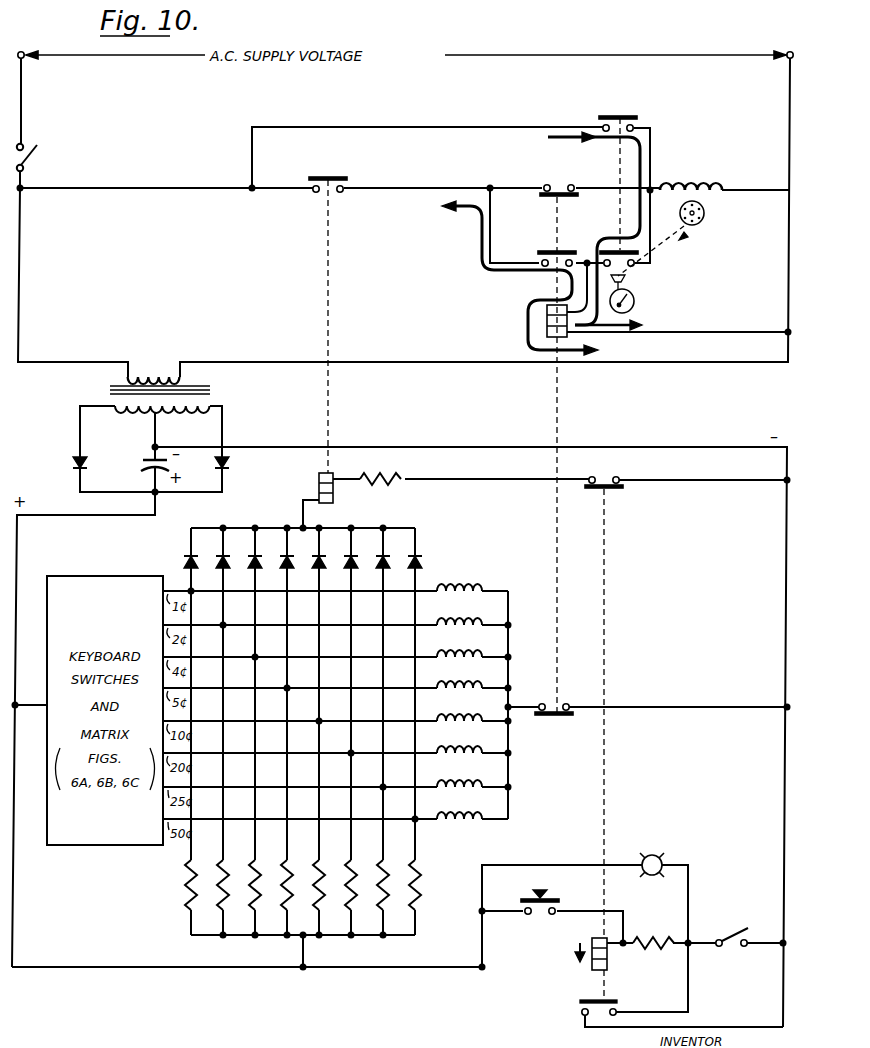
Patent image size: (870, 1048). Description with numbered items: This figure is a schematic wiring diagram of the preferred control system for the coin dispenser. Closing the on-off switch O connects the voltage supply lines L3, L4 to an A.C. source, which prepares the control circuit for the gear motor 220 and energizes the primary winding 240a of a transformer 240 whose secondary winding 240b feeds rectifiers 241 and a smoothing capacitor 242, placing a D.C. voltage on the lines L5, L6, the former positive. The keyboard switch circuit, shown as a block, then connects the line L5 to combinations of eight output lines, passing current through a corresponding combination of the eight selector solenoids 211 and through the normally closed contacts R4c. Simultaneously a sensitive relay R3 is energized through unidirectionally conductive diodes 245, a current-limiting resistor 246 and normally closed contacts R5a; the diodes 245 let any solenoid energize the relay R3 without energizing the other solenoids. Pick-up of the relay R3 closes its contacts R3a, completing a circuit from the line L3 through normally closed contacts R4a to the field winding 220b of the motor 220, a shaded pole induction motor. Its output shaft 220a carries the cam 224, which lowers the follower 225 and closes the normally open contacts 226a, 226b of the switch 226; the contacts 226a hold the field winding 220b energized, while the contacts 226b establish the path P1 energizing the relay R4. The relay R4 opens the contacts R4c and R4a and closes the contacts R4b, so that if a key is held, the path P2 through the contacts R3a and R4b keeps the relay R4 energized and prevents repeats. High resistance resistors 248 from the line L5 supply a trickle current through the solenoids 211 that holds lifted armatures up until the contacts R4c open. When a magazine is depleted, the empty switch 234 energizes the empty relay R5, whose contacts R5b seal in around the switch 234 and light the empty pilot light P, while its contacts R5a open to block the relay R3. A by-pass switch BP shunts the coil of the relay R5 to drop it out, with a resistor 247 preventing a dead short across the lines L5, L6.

The gear motor 220 is at (704, 213).
The output shaft 220a is at (662, 253).
The field winding 220b is at (697, 186).
The cam 224 is at (636, 301).
The follower 225 is at (627, 278).
The switch 226 is at (636, 114).
The cam switch contacts 226a is at (616, 114).
The cam switch contacts 226b is at (612, 248).
The empty switch 234 is at (725, 932).
The transformer 240 is at (222, 389).
The primary winding 240a is at (160, 372).
The secondary winding 240b is at (115, 407).
The rectifiers 241 is at (74, 462).
The smoothing capacitor 242 is at (143, 462).
The unidirectionally conductive diodes 245 is at (220, 556).
The resistor 246 is at (404, 474).
The resistor 247 is at (647, 939).
The high resistance resistors 248 is at (187, 902).
The selector solenoids 211 is at (454, 817).
The conduction path P1 is at (562, 131).
The conduction path P2 is at (475, 244).
The empty pilot light P is at (658, 856).
The by-pass switch BP is at (547, 917).
The relay R3 is at (333, 488).
The relay contacts R3a is at (333, 178).
The relay R4 is at (547, 313).
The relay contacts R4a is at (548, 185).
The relay contacts R4b is at (547, 250).
The relay contacts R4c is at (570, 717).
The empty relay R5 is at (590, 973).
The relay contacts R5a is at (617, 489).
The relay contacts R5b is at (606, 1000).
The voltage supply line L3 is at (19, 224).
The voltage supply line L4 is at (751, 99).
The D.C. supply line L5 is at (17, 546).
The D.C. supply line L6 is at (786, 601).
The on-off switch O is at (36, 152).